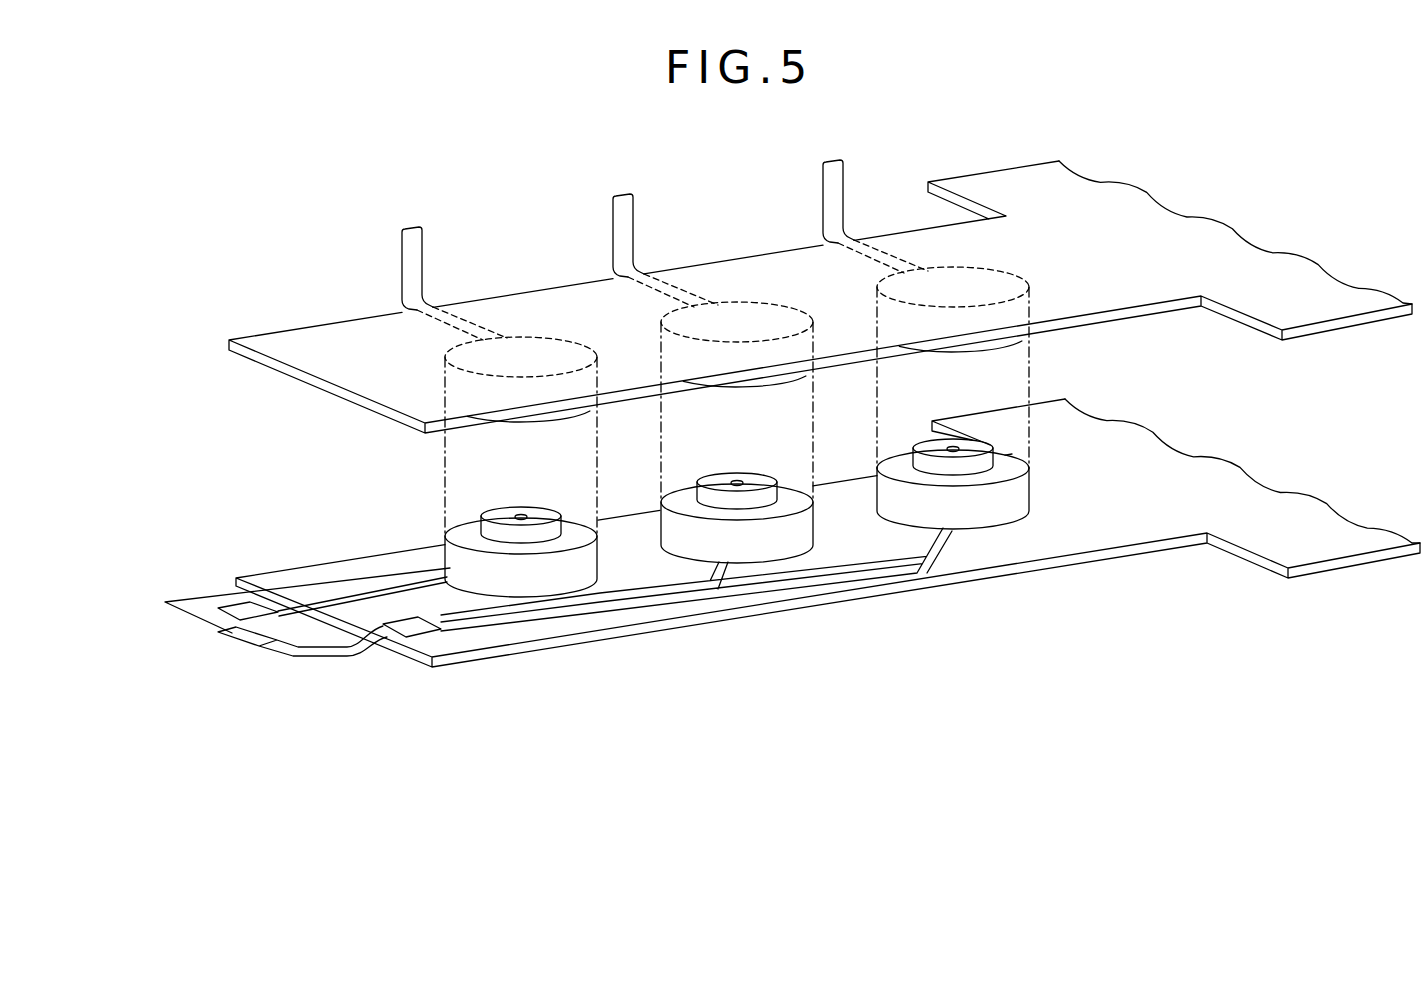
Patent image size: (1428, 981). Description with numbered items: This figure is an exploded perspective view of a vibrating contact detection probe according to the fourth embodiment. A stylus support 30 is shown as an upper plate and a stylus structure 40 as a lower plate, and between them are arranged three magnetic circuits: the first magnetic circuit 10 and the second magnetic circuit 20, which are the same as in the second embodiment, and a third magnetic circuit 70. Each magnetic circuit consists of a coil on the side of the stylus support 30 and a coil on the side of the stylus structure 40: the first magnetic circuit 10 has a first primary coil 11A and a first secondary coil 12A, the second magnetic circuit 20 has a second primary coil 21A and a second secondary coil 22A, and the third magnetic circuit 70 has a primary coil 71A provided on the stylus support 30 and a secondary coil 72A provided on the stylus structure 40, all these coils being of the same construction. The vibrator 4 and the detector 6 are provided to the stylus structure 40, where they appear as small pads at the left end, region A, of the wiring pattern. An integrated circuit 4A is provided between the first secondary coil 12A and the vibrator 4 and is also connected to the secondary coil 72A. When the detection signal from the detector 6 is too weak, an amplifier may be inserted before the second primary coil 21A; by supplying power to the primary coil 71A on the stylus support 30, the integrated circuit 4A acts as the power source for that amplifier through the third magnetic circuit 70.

The stylus support 30 is at (1148, 220).
The stylus structure 40 is at (1155, 457).
The first magnetic circuit 10 is at (792, 694).
The second magnetic circuit 20 is at (582, 728).
The third magnetic circuit 70 is at (1012, 662).
The first primary coil 11A is at (773, 383).
The first secondary coil 12A is at (765, 550).
The second primary coil 21A is at (553, 583).
The second secondary coil 22A is at (562, 424).
The primary coil 71A is at (992, 347).
The secondary coil 72A is at (982, 517).
The vibrator 4 is at (232, 643).
The integrated circuit 4A is at (413, 628).
The detector 6 is at (232, 607).
The wiring sheet A is at (192, 603).